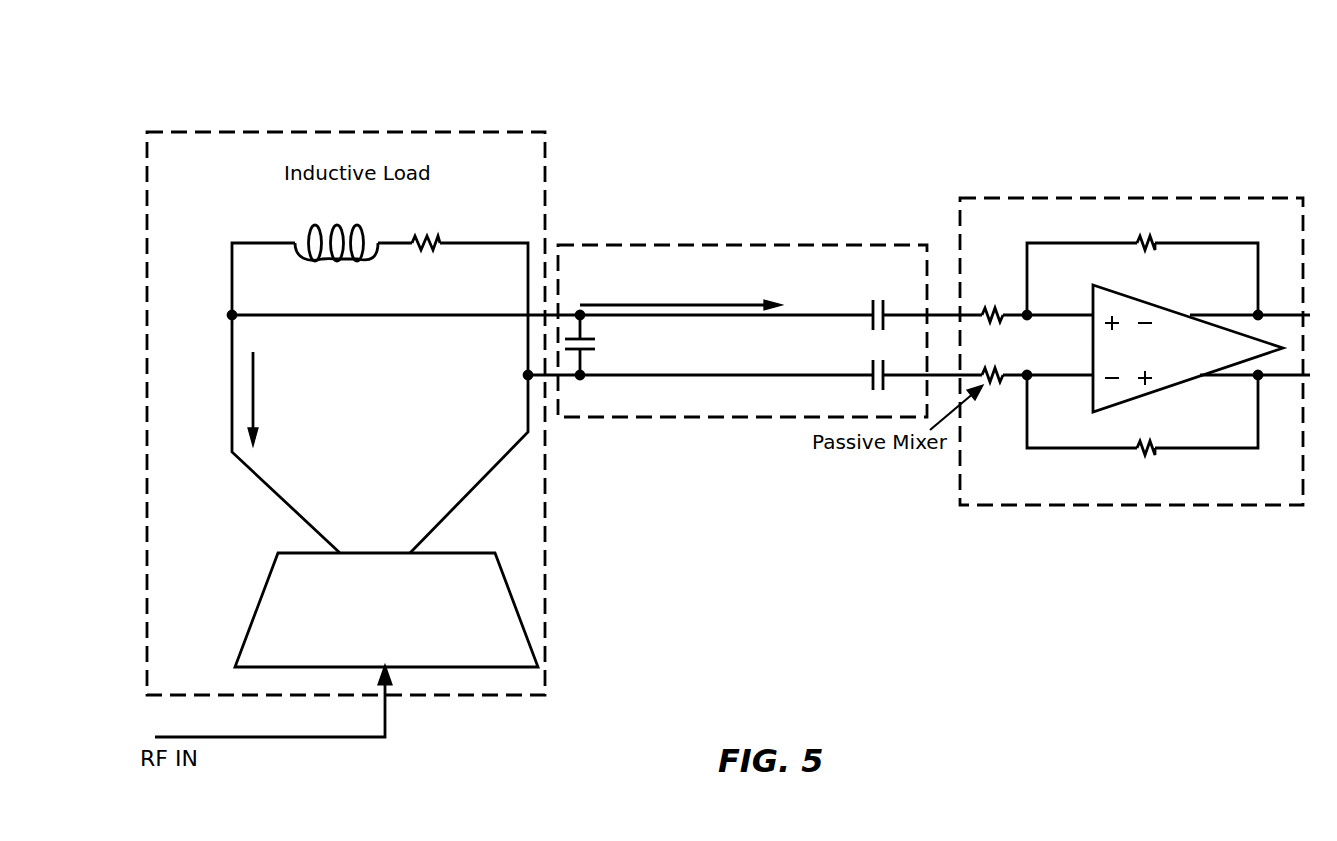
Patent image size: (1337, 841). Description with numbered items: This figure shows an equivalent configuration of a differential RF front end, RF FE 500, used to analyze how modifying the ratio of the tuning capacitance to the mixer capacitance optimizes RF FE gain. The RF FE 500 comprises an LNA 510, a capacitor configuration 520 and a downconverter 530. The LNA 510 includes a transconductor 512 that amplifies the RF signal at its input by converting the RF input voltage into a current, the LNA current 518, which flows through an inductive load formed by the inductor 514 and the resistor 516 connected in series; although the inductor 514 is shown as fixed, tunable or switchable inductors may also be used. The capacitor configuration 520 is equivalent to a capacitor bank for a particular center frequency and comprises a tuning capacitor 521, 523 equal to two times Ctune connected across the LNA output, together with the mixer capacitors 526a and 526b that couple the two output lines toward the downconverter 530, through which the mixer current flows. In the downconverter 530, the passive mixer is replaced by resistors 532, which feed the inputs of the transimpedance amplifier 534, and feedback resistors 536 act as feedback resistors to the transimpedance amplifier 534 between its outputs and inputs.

The RF FE 500 is at (1086, 97).
The LNA 510 is at (512, 132).
The transconductor 512 is at (468, 553).
The inductor 514 is at (337, 225).
The resistor 516 is at (421, 240).
The LNA current ILNA 518 is at (256, 432).
The capacitor configuration 520 is at (735, 245).
The tuning capacitor 2xCtune 521 is at (593, 378).
The capacitor 523 is at (688, 288).
The capacitor Cmixer 526a is at (871, 310).
The capacitor Cmixer 526b is at (871, 388).
The downconverter 530 is at (1220, 198).
The resistors R_M 532 is at (1008, 312).
The transimpedance amplifier 534 is at (1170, 306).
The feedback resistors 536 is at (1146, 252).